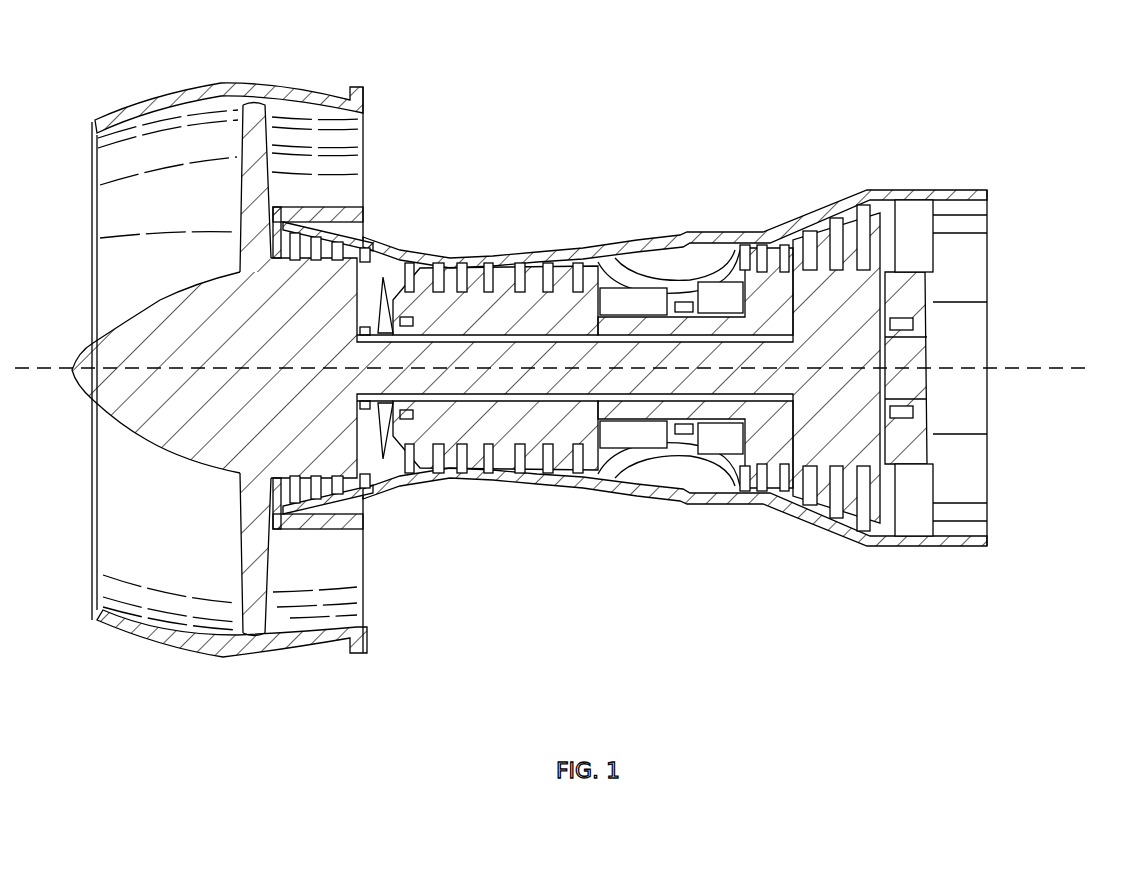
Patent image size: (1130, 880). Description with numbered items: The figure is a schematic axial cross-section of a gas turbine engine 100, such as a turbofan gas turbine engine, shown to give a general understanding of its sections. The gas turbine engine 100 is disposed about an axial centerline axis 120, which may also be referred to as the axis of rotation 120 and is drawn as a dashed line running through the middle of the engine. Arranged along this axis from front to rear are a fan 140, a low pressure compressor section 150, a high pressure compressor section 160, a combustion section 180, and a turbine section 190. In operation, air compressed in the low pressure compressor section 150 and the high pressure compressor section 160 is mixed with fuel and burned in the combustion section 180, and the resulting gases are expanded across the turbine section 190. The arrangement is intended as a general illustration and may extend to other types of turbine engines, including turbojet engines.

The gas turbine engine 100 is at (916, 122).
The axial centerline axis 120 is at (1008, 368).
The fan 140 is at (250, 590).
The low pressure compressor section 150 is at (266, 678).
The high pressure compressor section 160 is at (424, 527).
The combustion section 180 is at (612, 527).
The turbine section 190 is at (886, 587).